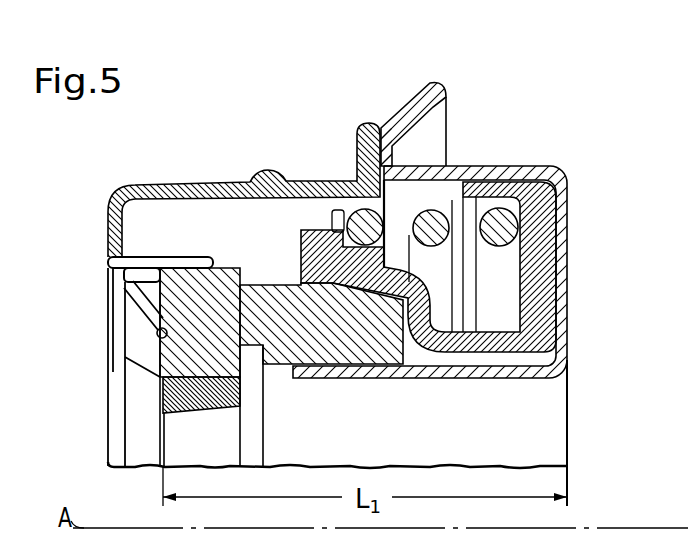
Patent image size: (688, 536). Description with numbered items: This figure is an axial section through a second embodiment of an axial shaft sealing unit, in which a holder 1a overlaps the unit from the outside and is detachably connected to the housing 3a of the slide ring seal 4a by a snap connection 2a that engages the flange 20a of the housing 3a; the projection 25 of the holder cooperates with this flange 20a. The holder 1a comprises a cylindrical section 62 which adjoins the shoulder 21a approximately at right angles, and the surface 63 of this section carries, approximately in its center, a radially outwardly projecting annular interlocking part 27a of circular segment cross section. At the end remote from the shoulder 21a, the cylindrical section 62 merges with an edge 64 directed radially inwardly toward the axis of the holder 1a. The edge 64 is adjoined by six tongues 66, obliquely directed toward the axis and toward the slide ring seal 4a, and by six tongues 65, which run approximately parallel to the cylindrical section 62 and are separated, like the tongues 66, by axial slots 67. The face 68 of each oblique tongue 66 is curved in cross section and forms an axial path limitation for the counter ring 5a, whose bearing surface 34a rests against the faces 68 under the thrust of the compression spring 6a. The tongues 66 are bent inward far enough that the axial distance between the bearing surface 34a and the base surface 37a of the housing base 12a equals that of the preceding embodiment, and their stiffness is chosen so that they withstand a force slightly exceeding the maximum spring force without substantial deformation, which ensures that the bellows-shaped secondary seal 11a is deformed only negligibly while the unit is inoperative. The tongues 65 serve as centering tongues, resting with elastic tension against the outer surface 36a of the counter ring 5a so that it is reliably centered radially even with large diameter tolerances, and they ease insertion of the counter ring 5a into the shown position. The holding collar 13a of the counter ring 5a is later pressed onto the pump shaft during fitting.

The holder 1a is at (312, 174).
The snap connection 2a is at (383, 108).
The housing 3a is at (466, 163).
The slide ring seal 4a is at (538, 156).
The counter ring 5a is at (232, 277).
The compression spring 6a is at (493, 225).
The bellows-shaped secondary seal 11a is at (527, 340).
The housing base 12a is at (557, 322).
The holding collar 13a is at (160, 407).
The flange 20a is at (392, 158).
The shoulder 21a is at (360, 137).
The flange edge 25 is at (397, 150).
The annular interlocking part 27a is at (272, 175).
The bearing surface 34a is at (110, 280).
The outer surface 36a is at (227, 268).
The base surface 37a is at (569, 260).
The cylindrical section 62 is at (138, 186).
The surface 63 is at (175, 186).
The edge 64 is at (108, 218).
The tongues 65 is at (200, 270).
The tongues 66 is at (140, 312).
The slots 67 is at (135, 383).
The face 68 is at (157, 337).